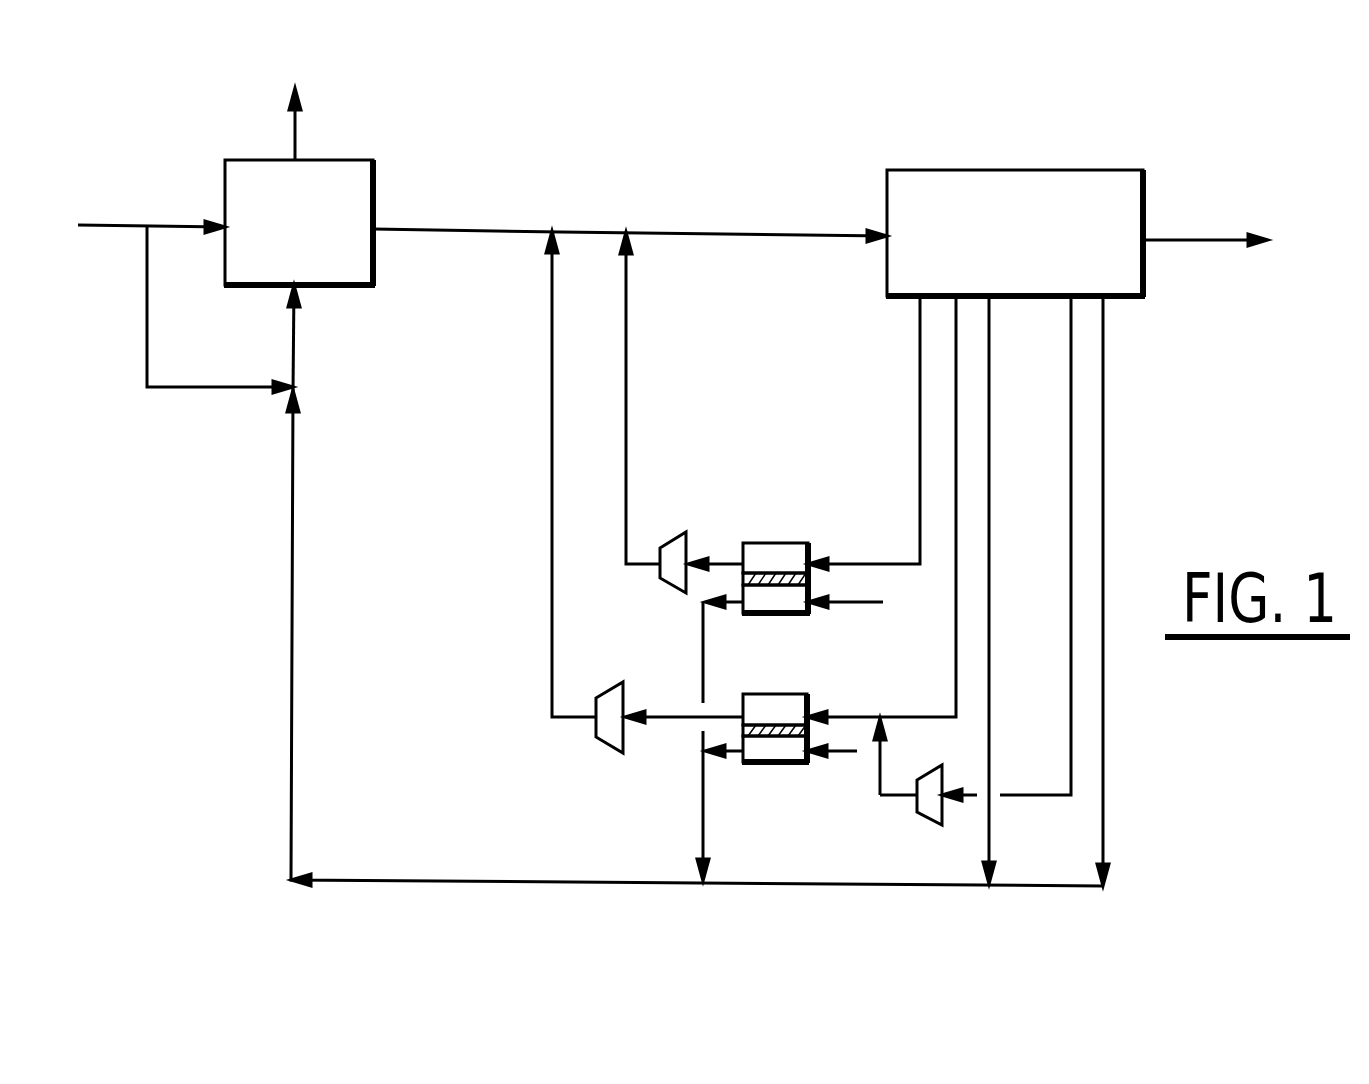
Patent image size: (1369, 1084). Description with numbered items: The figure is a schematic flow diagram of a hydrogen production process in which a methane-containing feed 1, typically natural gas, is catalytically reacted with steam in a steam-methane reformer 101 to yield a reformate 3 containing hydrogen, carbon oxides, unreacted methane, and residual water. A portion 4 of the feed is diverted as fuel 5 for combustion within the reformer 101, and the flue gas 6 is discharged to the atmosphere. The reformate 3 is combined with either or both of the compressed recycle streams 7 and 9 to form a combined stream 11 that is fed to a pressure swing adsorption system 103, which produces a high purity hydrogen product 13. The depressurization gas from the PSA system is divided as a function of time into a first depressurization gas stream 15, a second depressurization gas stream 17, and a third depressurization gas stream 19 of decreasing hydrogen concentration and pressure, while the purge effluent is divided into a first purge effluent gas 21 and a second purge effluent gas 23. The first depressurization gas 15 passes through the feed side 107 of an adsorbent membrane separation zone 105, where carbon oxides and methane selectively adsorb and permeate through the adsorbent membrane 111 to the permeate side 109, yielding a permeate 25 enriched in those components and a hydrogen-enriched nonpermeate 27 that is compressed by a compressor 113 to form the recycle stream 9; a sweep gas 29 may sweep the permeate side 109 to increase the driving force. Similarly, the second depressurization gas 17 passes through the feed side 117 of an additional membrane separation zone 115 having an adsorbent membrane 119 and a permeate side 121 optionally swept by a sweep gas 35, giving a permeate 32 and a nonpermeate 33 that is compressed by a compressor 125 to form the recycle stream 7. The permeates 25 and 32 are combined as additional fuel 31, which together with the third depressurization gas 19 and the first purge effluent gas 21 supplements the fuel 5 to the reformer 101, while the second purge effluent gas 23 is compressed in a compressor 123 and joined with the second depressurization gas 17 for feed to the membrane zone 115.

The methane-containing feed 1 is at (122, 225).
The reformate 3 is at (456, 229).
The portion of feed 4 is at (147, 320).
The fuel 5 is at (296, 352).
The flue gas 6 is at (294, 133).
The recycle stream 7 is at (552, 358).
The recycle stream 9 is at (628, 356).
The combined stream 11 is at (772, 234).
The hydrogen product 13 is at (1193, 240).
The first depressurization gas stream 15 is at (920, 352).
The second depressurization gas stream 17 is at (956, 412).
The third depressurization gas stream 19 is at (991, 402).
The first purge effluent gas 21 is at (1105, 448).
The second purge effluent gas 23 is at (1071, 432).
The permeate 25 is at (703, 636).
The nonpermeate 27 is at (720, 563).
The sweep gas 29 is at (858, 602).
The additional fuel 31 is at (294, 505).
The permeate 32 is at (732, 755).
The nonpermeate 33 is at (685, 714).
The sweep gas 35 is at (850, 752).
The steam-methane reformer 101 is at (375, 186).
The pressure swing adsorption system 103 is at (1032, 170).
The adsorbent membrane separation zone 105 is at (794, 567).
The feed side 107 is at (770, 555).
The permeate side 109 is at (757, 600).
The adsorbent membrane 111 is at (783, 587).
The compressor 113 is at (662, 575).
The additional membrane separation zone 115 is at (787, 760).
The feed side 117 is at (787, 710).
The adsorbent membrane 119 is at (758, 722).
The permeate side 121 is at (784, 762).
The compressor 123 is at (916, 812).
The compressor 125 is at (600, 740).